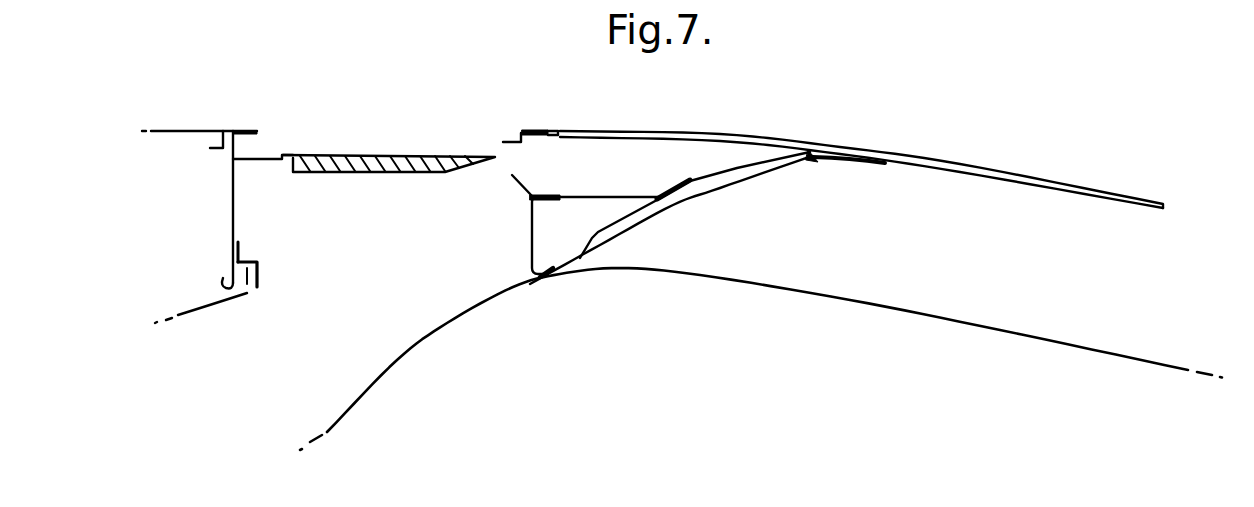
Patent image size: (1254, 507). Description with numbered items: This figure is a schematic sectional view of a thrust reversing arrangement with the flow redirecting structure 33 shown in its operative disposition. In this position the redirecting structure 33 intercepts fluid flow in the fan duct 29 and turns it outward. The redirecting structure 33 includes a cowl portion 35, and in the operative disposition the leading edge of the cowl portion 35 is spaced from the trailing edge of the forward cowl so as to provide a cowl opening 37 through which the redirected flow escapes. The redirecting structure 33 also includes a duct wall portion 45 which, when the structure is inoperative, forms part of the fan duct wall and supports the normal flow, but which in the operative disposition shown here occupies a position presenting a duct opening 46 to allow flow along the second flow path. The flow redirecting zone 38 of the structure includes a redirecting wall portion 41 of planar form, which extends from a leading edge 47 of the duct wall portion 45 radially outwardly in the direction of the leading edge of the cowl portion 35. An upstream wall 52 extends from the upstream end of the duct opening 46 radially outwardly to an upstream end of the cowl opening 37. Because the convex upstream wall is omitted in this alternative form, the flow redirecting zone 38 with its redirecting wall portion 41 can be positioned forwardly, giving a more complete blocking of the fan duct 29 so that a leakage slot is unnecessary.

The fan duct 29 is at (375, 347).
The redirecting structure 33 is at (592, 128).
The cowl portion 35 is at (877, 151).
The cowl opening 37 is at (372, 129).
The flow redirecting zone 38 is at (510, 188).
The redirecting wall portion 41 is at (531, 244).
The duct wall portion 45 is at (692, 187).
The duct opening 46 is at (320, 343).
The leading edge 47 is at (527, 286).
The upstream wall 52 is at (233, 203).